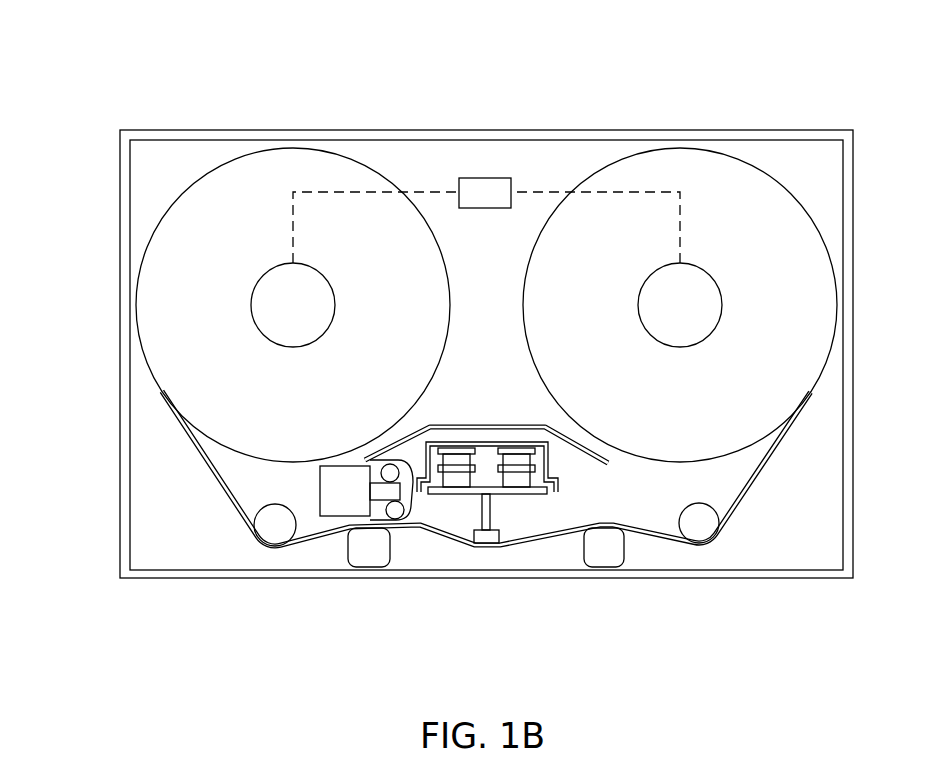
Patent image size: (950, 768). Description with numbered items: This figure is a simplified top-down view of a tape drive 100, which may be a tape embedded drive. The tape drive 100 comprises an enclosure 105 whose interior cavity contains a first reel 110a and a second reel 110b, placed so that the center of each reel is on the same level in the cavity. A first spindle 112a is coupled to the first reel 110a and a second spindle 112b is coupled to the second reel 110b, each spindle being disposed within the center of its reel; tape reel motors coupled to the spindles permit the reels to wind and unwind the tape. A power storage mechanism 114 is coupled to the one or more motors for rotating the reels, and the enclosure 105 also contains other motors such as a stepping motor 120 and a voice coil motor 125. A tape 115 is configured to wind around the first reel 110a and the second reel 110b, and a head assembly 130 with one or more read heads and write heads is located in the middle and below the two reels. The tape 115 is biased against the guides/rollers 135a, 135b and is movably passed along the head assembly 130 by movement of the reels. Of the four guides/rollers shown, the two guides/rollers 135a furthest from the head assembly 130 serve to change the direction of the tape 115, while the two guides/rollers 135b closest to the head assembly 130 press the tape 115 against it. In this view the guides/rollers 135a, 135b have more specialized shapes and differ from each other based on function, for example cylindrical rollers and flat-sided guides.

The tape drive 100 is at (114, 58).
The enclosure 105 is at (565, 130).
The first reel 110a is at (277, 148).
The second reel 110b is at (730, 157).
The first spindle 112a is at (320, 302).
The second spindle 112b is at (707, 302).
The power storage mechanism 114 is at (478, 185).
The tape 115 is at (218, 485).
The stepping motor 120 is at (330, 516).
The voice coil motor 125 is at (462, 495).
The head assembly 130 is at (485, 543).
The guides/rollers 135a is at (274, 527).
The guides/rollers 135b is at (371, 554).